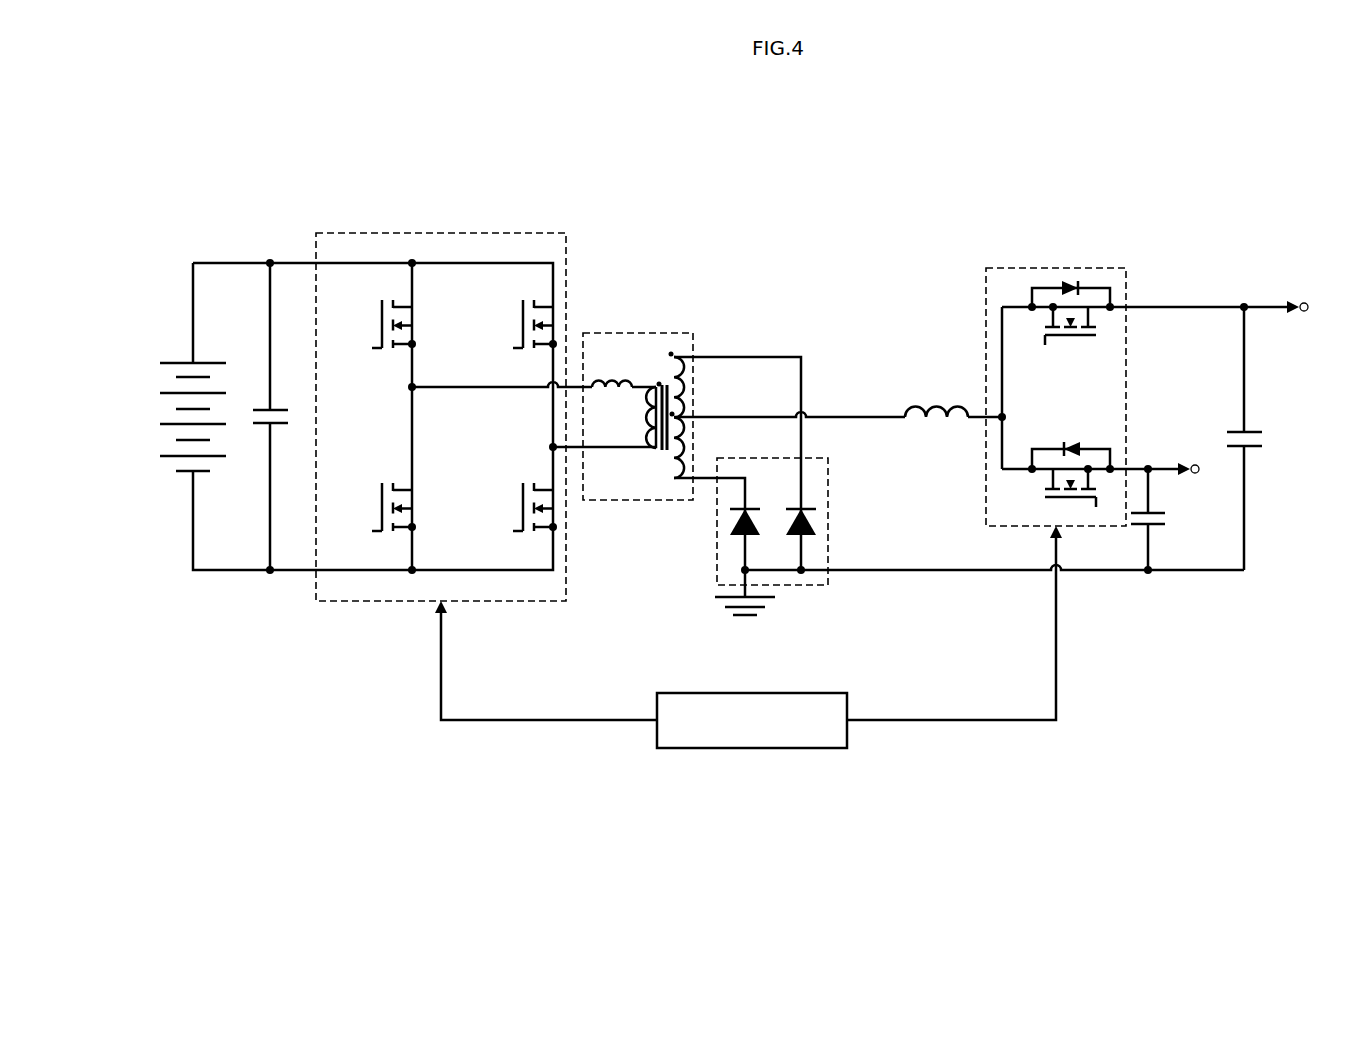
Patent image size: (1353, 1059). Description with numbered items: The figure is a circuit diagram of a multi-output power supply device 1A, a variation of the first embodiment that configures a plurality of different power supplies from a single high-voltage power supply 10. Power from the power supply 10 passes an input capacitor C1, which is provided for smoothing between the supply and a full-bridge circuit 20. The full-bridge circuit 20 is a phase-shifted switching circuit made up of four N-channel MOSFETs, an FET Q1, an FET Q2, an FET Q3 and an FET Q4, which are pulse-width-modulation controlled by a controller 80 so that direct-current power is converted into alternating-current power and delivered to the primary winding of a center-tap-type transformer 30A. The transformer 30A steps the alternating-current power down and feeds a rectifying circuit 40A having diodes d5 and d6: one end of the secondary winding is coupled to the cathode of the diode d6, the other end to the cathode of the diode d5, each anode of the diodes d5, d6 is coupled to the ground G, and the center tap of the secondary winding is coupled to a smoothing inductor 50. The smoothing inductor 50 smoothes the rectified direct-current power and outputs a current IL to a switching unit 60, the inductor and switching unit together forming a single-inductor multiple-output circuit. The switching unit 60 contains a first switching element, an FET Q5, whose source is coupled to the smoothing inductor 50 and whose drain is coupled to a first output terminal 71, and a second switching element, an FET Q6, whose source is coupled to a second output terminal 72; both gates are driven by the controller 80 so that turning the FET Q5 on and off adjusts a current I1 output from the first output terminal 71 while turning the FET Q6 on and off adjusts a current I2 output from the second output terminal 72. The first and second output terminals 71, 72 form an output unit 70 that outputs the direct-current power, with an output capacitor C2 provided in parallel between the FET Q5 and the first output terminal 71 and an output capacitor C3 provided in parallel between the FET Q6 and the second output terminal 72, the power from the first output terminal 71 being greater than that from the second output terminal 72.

The multi-output power supply device 1A is at (728, 175).
The power supply 10 is at (149, 414).
The full-bridge circuit 20 is at (437, 232).
The input capacitor C1 is at (280, 408).
The FET Q1 is at (393, 353).
The FET Q2 is at (390, 484).
The FET Q3 is at (533, 353).
The FET Q4 is at (533, 534).
The center-tap-type transformer 30A is at (632, 333).
The rectifying circuit 40A is at (951, 521).
The diode d5 is at (736, 533).
The diode d6 is at (810, 533).
The ground G is at (745, 622).
The smoothing inductor 50 is at (940, 394).
The current IL is at (976, 408).
The switching unit 60 is at (1053, 267).
The current I1 is at (1012, 300).
The current I2 is at (1022, 470).
The FET Q5 is at (1046, 330).
The FET Q6 is at (1041, 489).
The output unit 70 is at (1234, 349).
The first output terminal 71 is at (1301, 298).
The second output terminal 72 is at (1191, 458).
The output capacitor C2 is at (1250, 429).
The output capacitor C3 is at (1156, 529).
The controller 80 is at (750, 750).